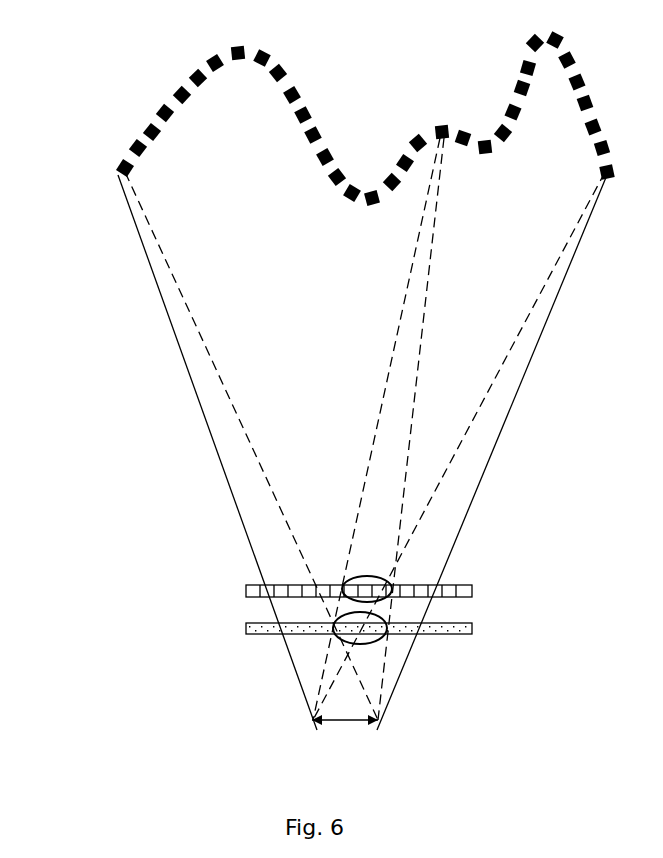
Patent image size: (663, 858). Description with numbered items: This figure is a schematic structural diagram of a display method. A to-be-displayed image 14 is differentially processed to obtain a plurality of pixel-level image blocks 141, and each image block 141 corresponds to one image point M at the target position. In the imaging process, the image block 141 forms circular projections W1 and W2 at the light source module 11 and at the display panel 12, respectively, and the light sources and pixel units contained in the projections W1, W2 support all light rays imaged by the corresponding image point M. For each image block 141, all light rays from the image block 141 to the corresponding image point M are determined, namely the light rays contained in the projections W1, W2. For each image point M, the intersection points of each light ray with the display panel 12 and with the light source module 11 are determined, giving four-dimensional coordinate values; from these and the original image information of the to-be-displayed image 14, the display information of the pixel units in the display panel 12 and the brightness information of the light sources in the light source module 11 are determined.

The to-be-displayed image 14 is at (155, 76).
The image block 141 is at (437, 127).
The light source module 11 is at (472, 591).
The display panel 12 is at (472, 628).
The circular projection W1 is at (350, 580).
The circular projection W2 is at (375, 641).
The image point M is at (353, 722).